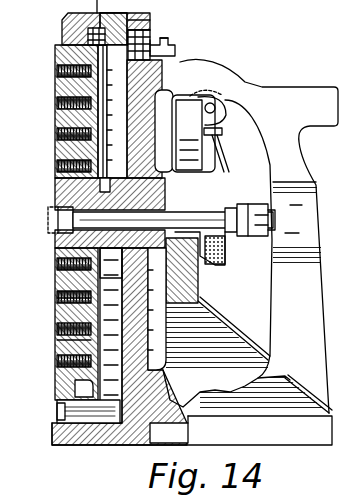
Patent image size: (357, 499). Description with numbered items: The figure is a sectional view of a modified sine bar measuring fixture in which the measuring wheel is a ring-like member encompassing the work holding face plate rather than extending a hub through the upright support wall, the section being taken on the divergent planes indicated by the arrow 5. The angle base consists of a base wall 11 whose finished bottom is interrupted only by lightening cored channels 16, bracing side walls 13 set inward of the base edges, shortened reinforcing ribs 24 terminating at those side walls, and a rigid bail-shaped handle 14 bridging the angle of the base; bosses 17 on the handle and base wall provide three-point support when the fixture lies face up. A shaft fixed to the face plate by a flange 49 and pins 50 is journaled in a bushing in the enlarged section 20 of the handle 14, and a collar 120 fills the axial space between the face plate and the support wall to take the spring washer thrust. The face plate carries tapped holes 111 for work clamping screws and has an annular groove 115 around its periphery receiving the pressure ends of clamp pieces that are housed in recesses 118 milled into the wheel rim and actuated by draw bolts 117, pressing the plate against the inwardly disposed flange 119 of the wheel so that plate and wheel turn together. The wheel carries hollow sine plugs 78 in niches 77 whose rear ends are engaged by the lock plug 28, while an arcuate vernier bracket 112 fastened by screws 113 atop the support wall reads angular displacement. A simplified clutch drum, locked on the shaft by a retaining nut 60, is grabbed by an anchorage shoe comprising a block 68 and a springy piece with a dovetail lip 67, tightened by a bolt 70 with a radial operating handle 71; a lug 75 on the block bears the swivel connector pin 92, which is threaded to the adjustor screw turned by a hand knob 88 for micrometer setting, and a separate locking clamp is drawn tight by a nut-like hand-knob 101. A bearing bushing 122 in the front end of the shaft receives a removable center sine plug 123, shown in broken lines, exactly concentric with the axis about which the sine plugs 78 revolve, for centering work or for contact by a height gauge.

The arrow 5 is at (323, 458).
The base wall 11 is at (52, 442).
The bracing side walls 13 is at (244, 336).
The handle 14 is at (238, 74).
The cored channels 16 is at (169, 433).
The bosses 17 is at (70, 91).
The enlarged section of handle 20 is at (297, 224).
The reinforcing ribs 24 is at (164, 206).
The lock plug 28 is at (347, 212).
The flange 49 is at (95, 258).
The pins 50 is at (80, 182).
The retaining nut 60 is at (212, 207).
The dovetail engaging lip 67 is at (162, 47).
The shoe block 68 is at (193, 133).
The tightening and loosening bolt 70 is at (222, 138).
The radial operating handle 71 is at (224, 157).
The lug 75 is at (198, 93).
The niches 77 is at (58, 402).
The sine plug 78 is at (57, 411).
The hand knob 88 is at (228, 106).
The swivel connector pin 92 is at (226, 99).
The hand-knob 101 is at (215, 262).
The tapped holes 111 is at (58, 298).
The vernier bracket 112 is at (150, 20).
The fastening screws 113 is at (176, 47).
The annular groove 115 is at (60, 70).
The draw bolt 117 is at (152, 31).
The recess 118 is at (72, 17).
The inwardly disposed flange 119 is at (105, 100).
The collar 120 is at (100, 162).
The bearing bushing 122 is at (70, 232).
The removable sine plug 123 is at (33, 210).